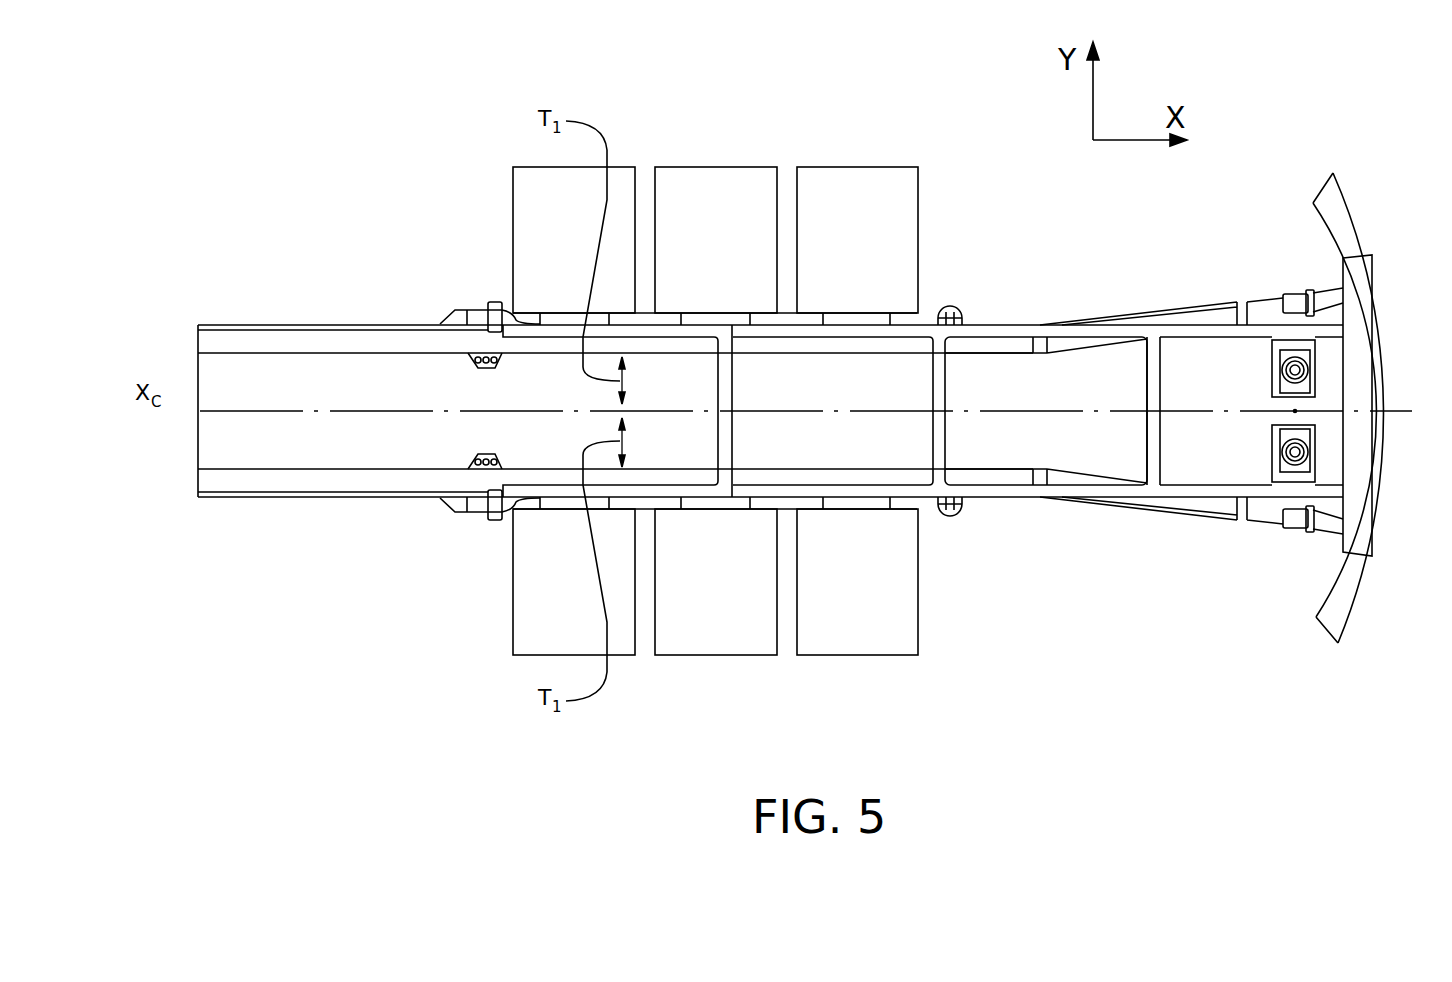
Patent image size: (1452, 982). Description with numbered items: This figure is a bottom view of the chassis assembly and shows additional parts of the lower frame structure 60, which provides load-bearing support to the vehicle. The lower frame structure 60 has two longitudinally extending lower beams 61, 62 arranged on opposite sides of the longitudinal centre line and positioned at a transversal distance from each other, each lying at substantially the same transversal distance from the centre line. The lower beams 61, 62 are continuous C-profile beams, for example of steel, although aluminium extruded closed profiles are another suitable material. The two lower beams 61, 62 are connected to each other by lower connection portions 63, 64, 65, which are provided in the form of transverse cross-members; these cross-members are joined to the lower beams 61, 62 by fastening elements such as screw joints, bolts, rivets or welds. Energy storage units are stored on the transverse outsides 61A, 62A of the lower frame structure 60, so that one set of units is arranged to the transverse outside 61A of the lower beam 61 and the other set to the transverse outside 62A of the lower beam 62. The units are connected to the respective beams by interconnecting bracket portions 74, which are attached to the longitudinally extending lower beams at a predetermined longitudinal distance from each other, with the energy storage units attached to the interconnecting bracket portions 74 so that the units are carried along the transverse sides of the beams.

The lower frame structure 60 is at (997, 332).
The longitudinally extending lower beam 61 is at (1092, 333).
The transverse outside of lower beam 61A is at (871, 332).
The longitudinally extending lower beam 62 is at (1250, 488).
The transverse outside of lower beam 62A is at (870, 490).
The lower connection portion 63 is at (1153, 368).
The lower connection portion 64 is at (940, 368).
The lower connection portion 65 is at (727, 372).
The interconnecting bracket portion 74 is at (707, 502).